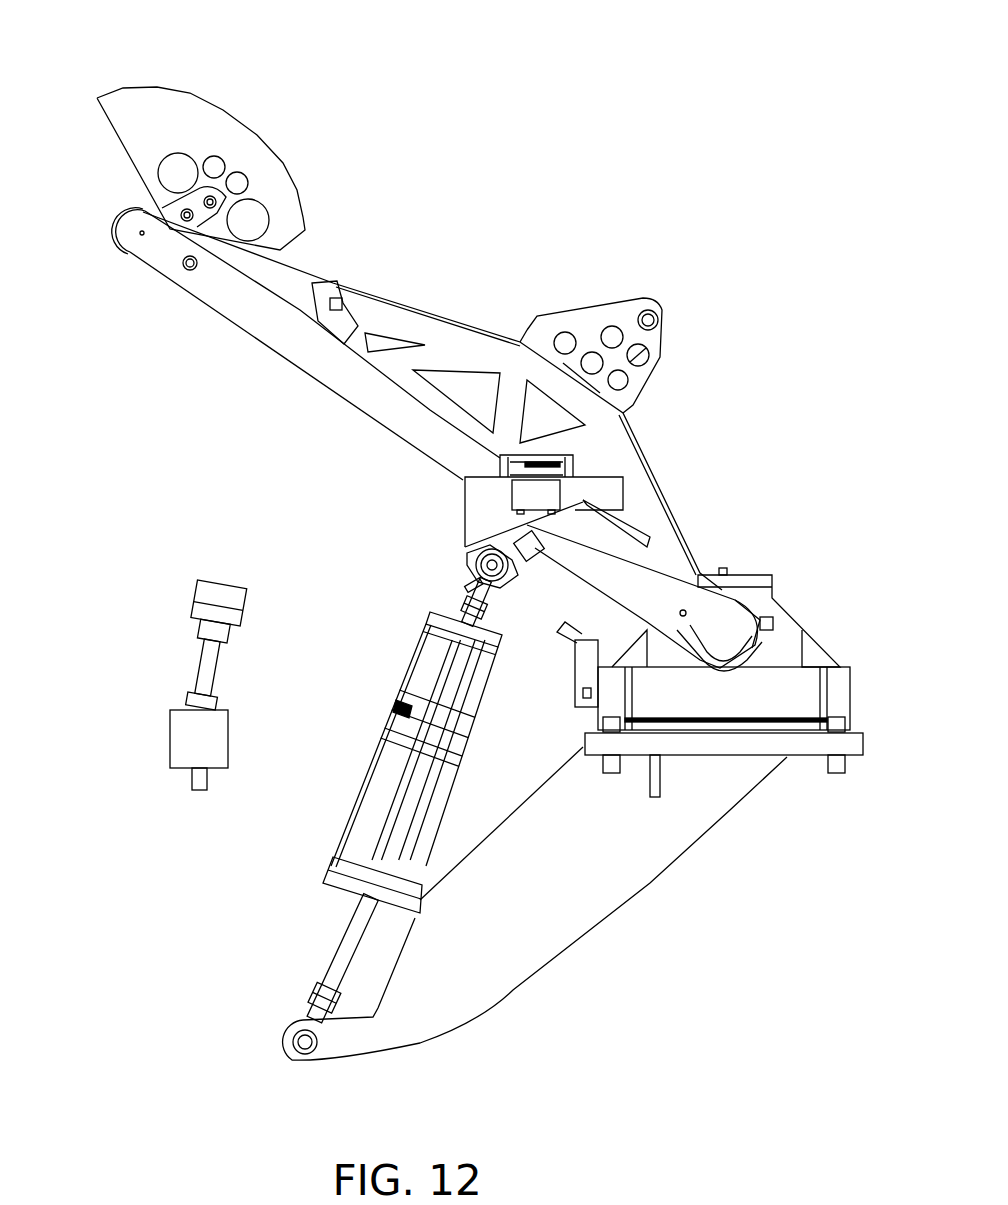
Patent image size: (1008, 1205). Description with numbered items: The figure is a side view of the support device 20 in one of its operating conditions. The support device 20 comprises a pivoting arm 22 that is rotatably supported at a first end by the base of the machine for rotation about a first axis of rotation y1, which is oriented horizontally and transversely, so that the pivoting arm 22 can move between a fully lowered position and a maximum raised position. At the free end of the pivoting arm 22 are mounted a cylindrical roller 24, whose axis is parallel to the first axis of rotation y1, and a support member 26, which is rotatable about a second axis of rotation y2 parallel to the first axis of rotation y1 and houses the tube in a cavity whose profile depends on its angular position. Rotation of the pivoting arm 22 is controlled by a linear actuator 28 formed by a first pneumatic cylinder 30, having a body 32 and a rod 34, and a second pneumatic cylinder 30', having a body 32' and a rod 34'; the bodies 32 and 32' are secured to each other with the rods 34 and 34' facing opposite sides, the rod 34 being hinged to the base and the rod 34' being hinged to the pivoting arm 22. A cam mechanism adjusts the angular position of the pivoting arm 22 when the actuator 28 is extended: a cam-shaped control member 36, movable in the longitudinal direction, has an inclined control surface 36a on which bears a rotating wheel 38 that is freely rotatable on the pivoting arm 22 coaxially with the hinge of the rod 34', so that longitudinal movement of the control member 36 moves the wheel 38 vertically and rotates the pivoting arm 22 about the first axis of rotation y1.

The support device 20 is at (485, 308).
The pivoting arm 22 is at (243, 330).
The cylindrical roller 24 is at (127, 228).
The support member 26 is at (247, 105).
The actuator 28 is at (483, 780).
The first pneumatic cylinder 30 is at (387, 745).
The second pneumatic cylinder 30' is at (408, 621).
The body 32 is at (444, 924).
The body 32' is at (468, 728).
The rod 34 is at (308, 958).
The rod 34' is at (431, 581).
The cam-shaped control member 36 is at (463, 517).
The control surface 36a is at (540, 533).
The rotating wheel 38 is at (515, 580).
The first axis of rotation y1 is at (745, 612).
The second axis of rotation y2 is at (150, 236).